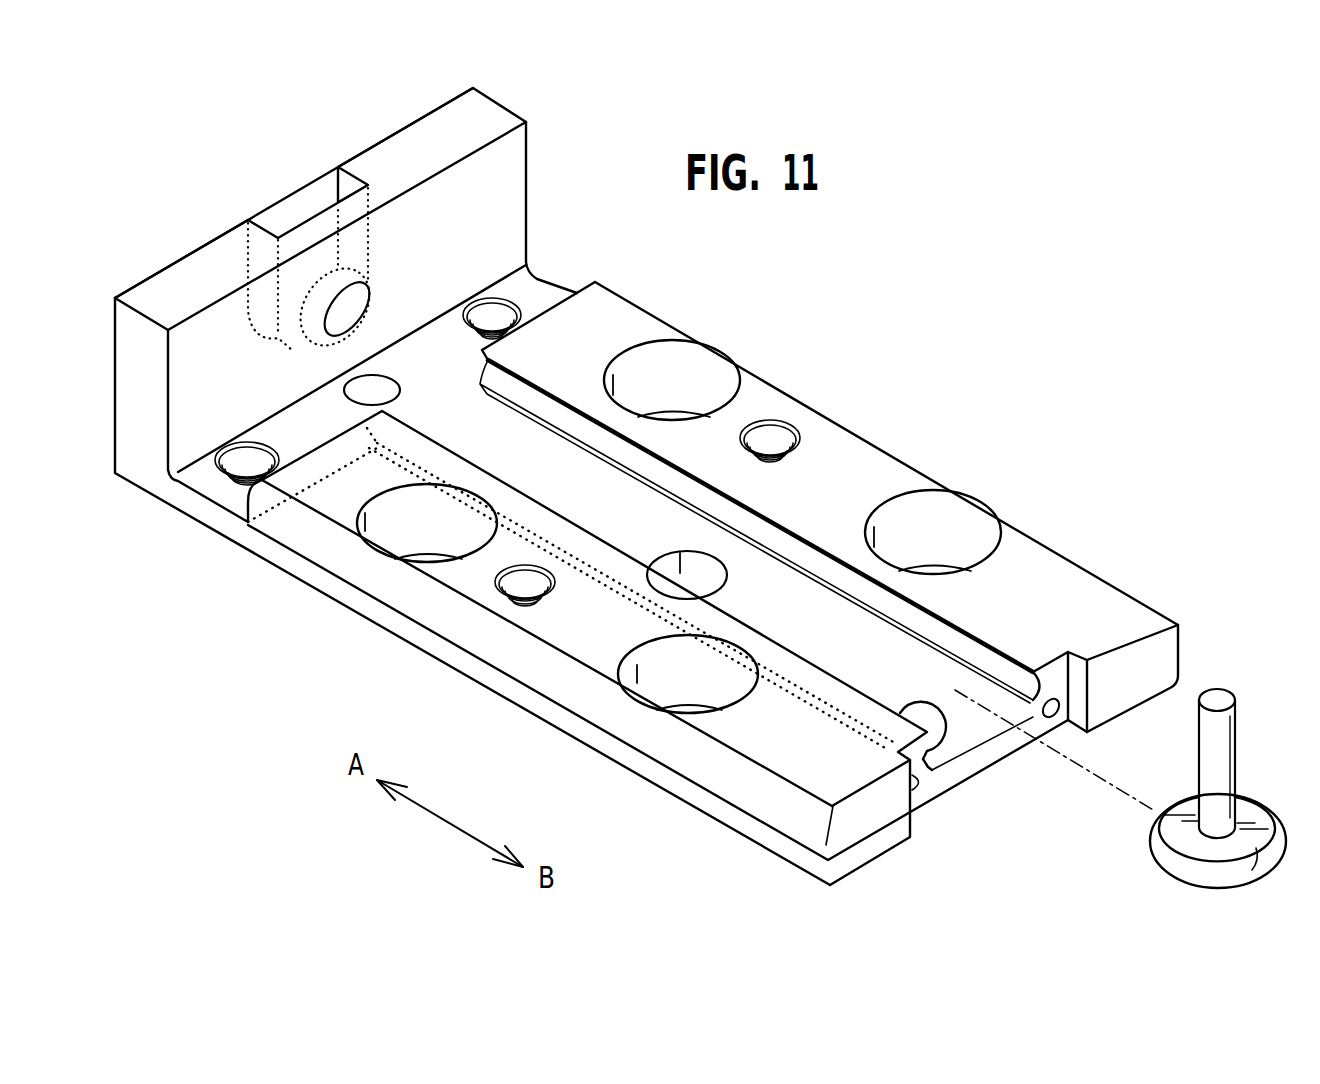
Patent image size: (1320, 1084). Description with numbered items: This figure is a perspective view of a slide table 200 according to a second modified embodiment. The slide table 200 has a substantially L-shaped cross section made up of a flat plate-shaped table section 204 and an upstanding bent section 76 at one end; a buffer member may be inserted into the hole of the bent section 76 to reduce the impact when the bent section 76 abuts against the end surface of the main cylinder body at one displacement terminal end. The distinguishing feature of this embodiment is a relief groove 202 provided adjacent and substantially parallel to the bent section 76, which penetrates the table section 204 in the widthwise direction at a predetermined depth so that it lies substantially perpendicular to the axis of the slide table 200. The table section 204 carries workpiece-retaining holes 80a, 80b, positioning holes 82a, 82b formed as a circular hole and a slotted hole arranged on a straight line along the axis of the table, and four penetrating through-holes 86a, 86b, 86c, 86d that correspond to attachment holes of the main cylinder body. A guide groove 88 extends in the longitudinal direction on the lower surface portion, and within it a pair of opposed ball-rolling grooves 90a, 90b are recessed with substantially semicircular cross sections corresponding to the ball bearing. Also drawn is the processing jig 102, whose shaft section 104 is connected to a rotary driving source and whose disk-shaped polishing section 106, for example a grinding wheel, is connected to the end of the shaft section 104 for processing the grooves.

The bent section 76 is at (418, 140).
The slide table 200 is at (318, 600).
The relief groove 202 is at (424, 369).
The table section 204 is at (1082, 613).
The workpiece-retaining hole 80a is at (780, 437).
The workpiece-retaining hole 80b is at (525, 592).
The positioning hole 82a is at (400, 393).
The positioning hole 82b is at (672, 552).
The penetrating through-hole 86a is at (922, 517).
The penetrating through-hole 86b is at (697, 683).
The penetrating through-hole 86c is at (668, 368).
The penetrating through-hole 86d is at (413, 535).
The guide groove 88 is at (970, 737).
The ball-rolling groove 90a is at (993, 665).
The ball-rolling groove 90b is at (888, 731).
The processing jig 102 is at (1182, 823).
The shaft section 104 is at (1208, 742).
The polishing section 106 is at (1165, 858).